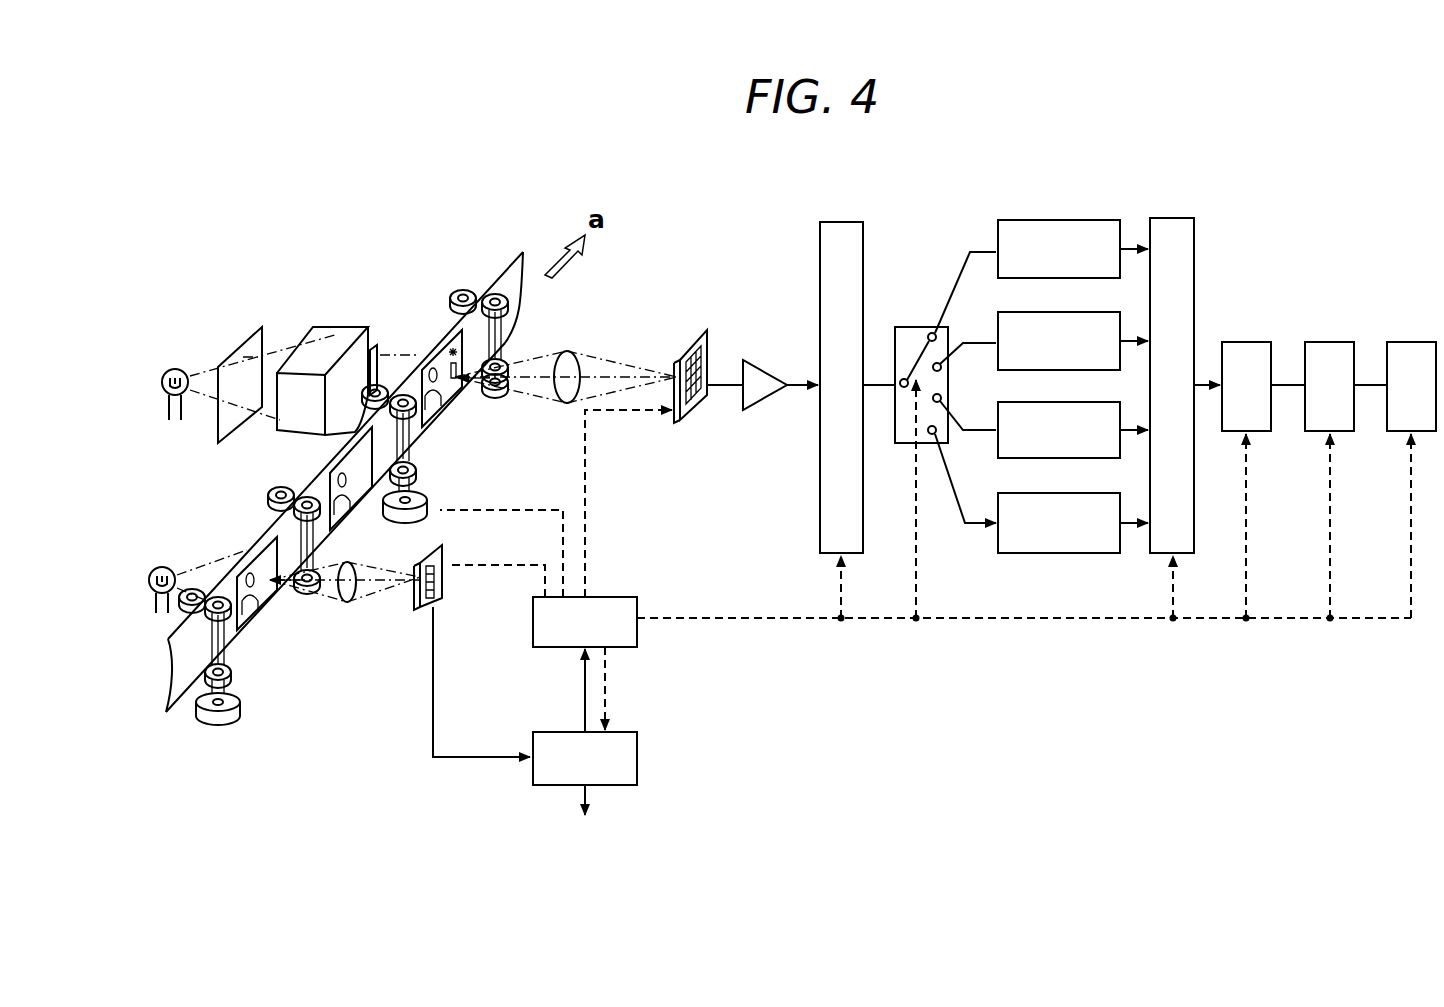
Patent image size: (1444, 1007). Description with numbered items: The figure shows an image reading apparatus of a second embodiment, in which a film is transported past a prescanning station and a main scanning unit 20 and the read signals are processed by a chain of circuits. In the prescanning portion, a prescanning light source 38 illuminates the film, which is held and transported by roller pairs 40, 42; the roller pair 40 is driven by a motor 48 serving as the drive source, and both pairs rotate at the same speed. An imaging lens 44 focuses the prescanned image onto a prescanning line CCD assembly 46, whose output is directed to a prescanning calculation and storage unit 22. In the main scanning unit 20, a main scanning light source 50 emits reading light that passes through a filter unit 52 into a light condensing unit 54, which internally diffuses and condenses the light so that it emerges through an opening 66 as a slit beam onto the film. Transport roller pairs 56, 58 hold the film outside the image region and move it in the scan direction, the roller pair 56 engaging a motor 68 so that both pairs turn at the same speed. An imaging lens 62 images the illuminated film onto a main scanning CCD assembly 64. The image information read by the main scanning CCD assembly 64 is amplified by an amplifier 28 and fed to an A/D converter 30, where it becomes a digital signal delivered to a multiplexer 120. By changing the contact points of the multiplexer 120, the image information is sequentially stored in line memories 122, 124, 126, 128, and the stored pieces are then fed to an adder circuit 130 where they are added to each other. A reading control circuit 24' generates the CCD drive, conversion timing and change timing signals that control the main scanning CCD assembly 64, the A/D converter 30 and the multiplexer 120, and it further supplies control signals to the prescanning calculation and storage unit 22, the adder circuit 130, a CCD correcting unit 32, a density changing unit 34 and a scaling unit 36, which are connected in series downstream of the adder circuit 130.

The main scanning unit 20 is at (418, 262).
The prescanning calculation and storage unit 22 is at (585, 732).
The reading control circuit 24' is at (556, 570).
The amplifier 28 is at (757, 362).
The A/D converter 30 is at (850, 222).
The CCD correcting unit 32 is at (1263, 480).
The density changing unit 34 is at (1346, 480).
The scaling unit 36 is at (1411, 480).
The prescanning light source 38 is at (160, 567).
The roller pair 40 is at (232, 668).
The roller pair 42 is at (268, 494).
The imaging lens 44 is at (352, 603).
The prescanning line CCD assembly 46 is at (440, 600).
The motor 48 is at (228, 730).
The main scanning light source 50 is at (177, 368).
The filter unit 52 is at (252, 345).
The light condensing unit 54 is at (338, 330).
The transport roller pair 56 is at (415, 470).
The transport roller pair 58 is at (493, 290).
The imaging lens 62 is at (578, 365).
The main scanning CCD assembly 64 is at (702, 330).
The opening 66 is at (378, 365).
The motor 68 is at (428, 503).
The multiplexer 120 is at (913, 327).
The line memory 122 is at (1065, 220).
The line memory 124 is at (1068, 312).
The line memory 126 is at (1068, 402).
The line memory 128 is at (1068, 493).
The adder circuit 130 is at (1180, 218).